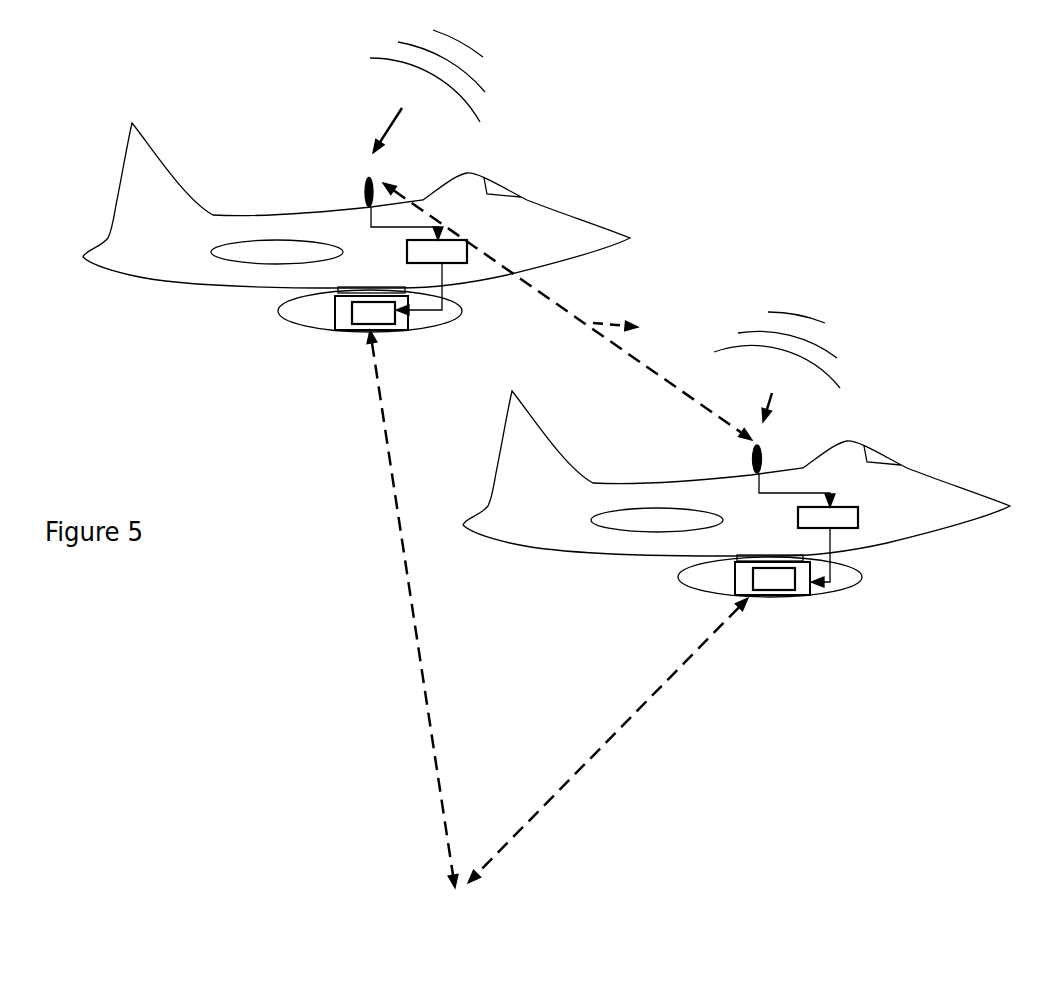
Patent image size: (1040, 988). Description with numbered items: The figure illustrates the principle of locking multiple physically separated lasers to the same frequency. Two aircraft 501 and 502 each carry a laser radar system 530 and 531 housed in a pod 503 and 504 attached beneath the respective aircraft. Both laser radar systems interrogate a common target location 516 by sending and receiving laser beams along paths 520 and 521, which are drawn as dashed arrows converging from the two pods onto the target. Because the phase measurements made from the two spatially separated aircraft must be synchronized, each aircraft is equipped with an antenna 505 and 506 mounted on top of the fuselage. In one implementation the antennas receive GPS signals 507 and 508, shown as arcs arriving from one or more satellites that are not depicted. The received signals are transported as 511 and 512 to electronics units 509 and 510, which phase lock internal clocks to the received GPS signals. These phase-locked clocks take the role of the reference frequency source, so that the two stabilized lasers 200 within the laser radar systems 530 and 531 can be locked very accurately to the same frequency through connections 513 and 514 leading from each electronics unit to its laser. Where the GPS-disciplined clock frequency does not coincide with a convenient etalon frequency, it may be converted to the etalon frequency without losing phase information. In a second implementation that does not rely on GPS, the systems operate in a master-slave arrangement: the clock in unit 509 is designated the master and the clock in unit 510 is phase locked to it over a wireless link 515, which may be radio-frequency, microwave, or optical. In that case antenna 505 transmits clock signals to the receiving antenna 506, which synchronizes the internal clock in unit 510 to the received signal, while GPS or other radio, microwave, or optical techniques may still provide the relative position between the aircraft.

The stabilized laser 200 is at (573, 446).
The aircraft 501 is at (232, 215).
The aircraft 502 is at (615, 482).
The pod 503 is at (450, 323).
The pod 504 is at (678, 580).
The antenna 505 is at (365, 185).
The antenna 506 is at (763, 447).
The GPS signals 507 is at (444, 91).
The GPS signals 508 is at (777, 362).
The electronics unit 509 is at (437, 252).
The electronics unit 510 is at (828, 518).
The received signal transport 511 is at (407, 222).
The received signal transport 512 is at (797, 488).
The connection 513 is at (440, 291).
The connection 514 is at (853, 563).
The wireless link 515 is at (567, 311).
The target location 516 is at (448, 884).
The path 520 is at (407, 602).
The path 521 is at (612, 736).
The laser radar system 530 is at (333, 310).
The laser radar system 531 is at (733, 585).